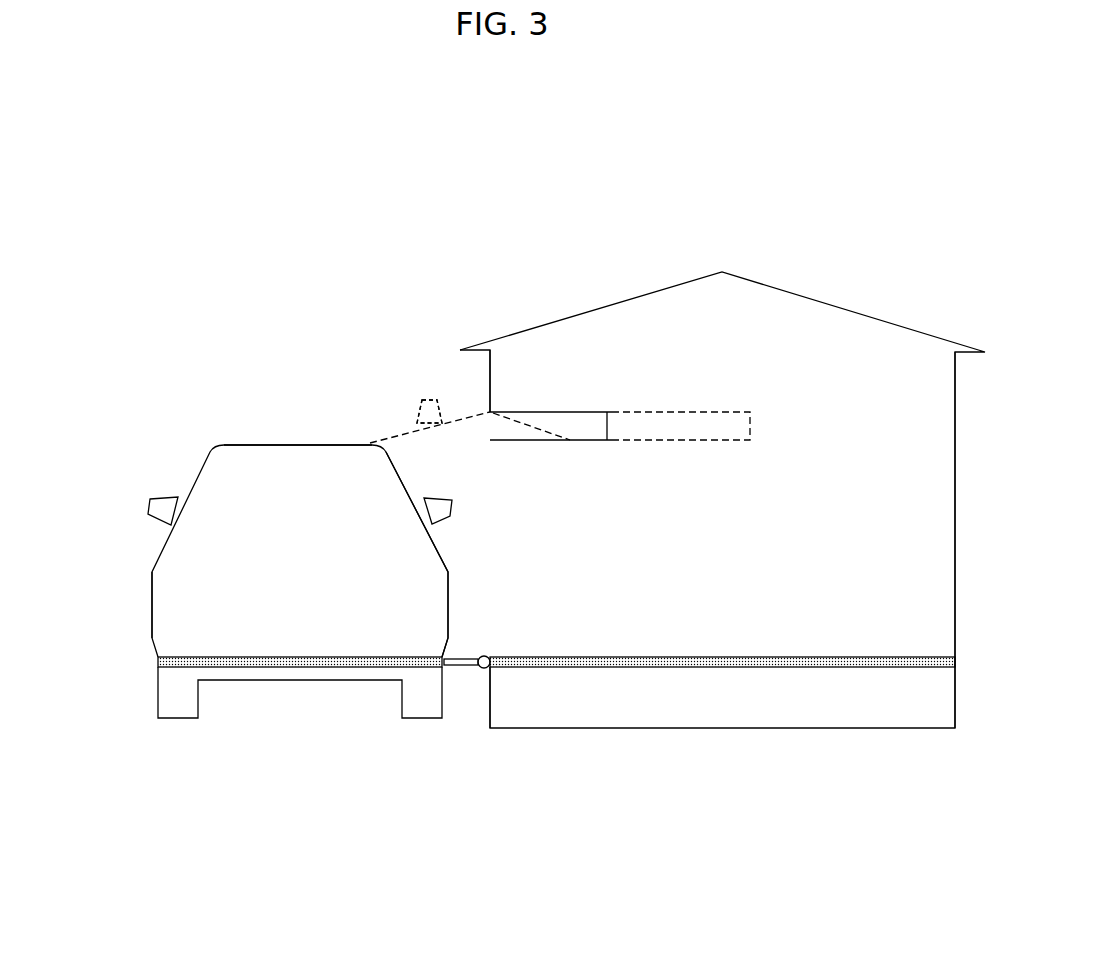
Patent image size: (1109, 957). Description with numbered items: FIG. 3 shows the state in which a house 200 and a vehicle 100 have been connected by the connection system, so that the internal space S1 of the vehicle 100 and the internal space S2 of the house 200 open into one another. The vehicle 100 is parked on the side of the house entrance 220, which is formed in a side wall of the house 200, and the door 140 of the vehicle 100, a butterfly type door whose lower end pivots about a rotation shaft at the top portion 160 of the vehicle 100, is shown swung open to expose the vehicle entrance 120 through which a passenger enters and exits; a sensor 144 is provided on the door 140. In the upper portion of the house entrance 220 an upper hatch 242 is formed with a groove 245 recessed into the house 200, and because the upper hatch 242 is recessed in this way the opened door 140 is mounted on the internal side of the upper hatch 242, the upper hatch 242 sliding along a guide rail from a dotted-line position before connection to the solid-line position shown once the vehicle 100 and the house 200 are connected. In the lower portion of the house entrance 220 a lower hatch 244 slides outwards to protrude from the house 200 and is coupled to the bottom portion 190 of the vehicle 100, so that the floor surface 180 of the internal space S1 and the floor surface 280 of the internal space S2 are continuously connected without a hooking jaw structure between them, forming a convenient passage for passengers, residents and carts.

The vehicle 100 is at (172, 484).
The vehicle entrance 120 is at (422, 548).
The door 140 is at (411, 389).
The sensor 144 is at (429, 411).
The top portion 160 is at (324, 438).
The floor surface 180 is at (250, 668).
The bottom portion 190 is at (452, 678).
The house 200 is at (798, 262).
The house entrance 220 is at (491, 486).
The upper hatch 242 is at (633, 412).
The lower hatch 244 is at (470, 660).
The groove 245 is at (540, 422).
The floor surface 280 is at (637, 667).
The internal space S1 is at (289, 562).
The internal space S2 is at (712, 553).